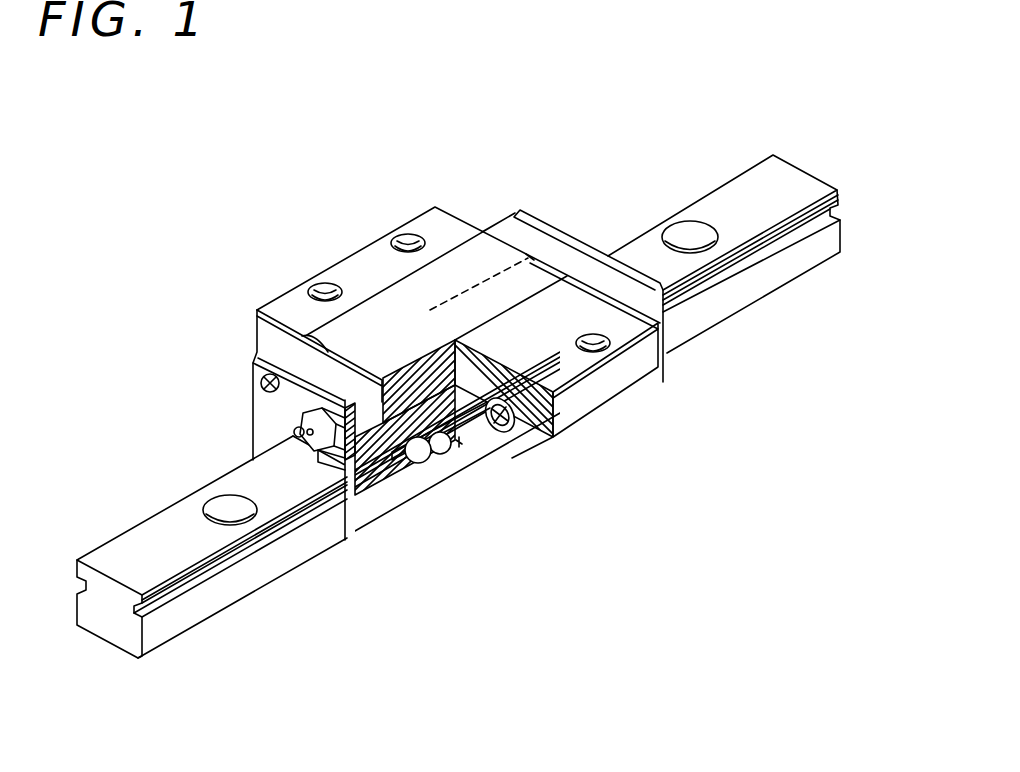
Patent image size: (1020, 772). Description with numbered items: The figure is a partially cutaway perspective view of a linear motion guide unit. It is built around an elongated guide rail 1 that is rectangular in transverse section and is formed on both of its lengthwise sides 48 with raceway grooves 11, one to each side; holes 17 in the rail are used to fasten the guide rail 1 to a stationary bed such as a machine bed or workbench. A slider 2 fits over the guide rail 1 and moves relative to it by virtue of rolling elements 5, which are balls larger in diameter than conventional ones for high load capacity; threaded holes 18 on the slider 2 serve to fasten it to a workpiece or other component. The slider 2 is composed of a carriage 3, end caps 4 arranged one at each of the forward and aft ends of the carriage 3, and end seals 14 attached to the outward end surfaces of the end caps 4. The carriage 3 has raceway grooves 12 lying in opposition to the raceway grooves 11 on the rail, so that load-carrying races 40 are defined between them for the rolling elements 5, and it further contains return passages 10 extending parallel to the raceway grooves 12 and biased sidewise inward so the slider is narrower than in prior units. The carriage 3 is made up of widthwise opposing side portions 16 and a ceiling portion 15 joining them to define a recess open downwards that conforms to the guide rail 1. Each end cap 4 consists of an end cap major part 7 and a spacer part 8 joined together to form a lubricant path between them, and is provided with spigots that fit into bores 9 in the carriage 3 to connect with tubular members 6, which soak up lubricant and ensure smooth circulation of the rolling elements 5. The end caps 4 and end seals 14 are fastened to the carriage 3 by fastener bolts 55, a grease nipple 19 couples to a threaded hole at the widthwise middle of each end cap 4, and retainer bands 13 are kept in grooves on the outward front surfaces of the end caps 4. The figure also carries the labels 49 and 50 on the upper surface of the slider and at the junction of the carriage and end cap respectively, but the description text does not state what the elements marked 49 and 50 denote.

The guide rail 1 is at (148, 533).
The slider 2 is at (553, 199).
The carriage 3 is at (382, 258).
The end caps 4 is at (513, 228).
The rolling elements 5 is at (424, 464).
The tubular members 6 is at (530, 453).
The end cap major part 7 is at (364, 423).
The spacer part 8 is at (378, 420).
The bores 9 is at (513, 463).
The return passages 10 is at (497, 398).
The raceway grooves 11 is at (788, 275).
The raceway grooves 12 is at (460, 447).
The retainer bands 13 is at (400, 457).
The end seals 14 is at (570, 238).
The ceiling portion 15 is at (403, 342).
The side portions 16 is at (507, 460).
The holes 17 is at (690, 237).
The threaded holes 18 is at (408, 238).
The grease nipple 19 is at (314, 434).
The load-carrying races 40 is at (457, 437).
The lengthwise sides 48 is at (722, 308).
The slider top face 49 is at (435, 280).
The seal 50 is at (530, 257).
The fastener bolts 55 is at (258, 377).